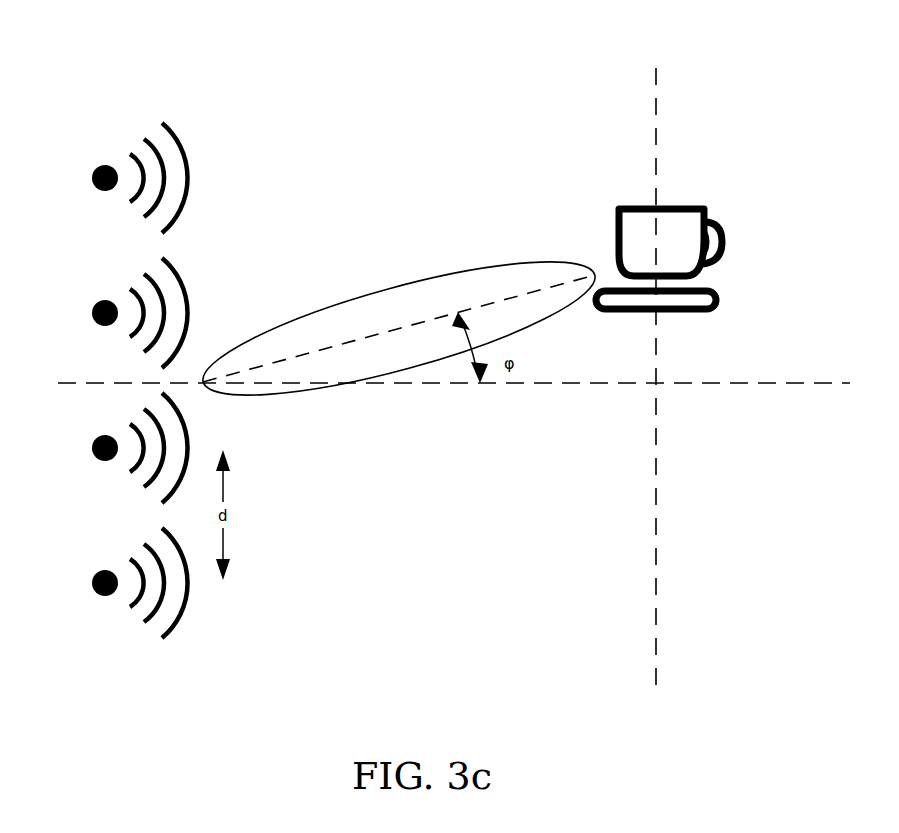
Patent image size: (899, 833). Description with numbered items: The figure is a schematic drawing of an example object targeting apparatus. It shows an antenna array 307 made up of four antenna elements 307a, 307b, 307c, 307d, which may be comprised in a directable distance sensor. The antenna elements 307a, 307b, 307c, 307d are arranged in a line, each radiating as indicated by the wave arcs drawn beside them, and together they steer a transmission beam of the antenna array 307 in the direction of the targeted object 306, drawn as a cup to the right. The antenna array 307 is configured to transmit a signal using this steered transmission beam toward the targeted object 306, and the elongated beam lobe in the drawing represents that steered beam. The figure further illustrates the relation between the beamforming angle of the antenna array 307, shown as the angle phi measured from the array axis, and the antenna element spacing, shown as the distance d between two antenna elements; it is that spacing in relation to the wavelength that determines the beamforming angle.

The antenna array 307 is at (50, 72).
The antenna element 307a is at (76, 178).
The antenna element 307b is at (76, 313).
The antenna element 307c is at (76, 448).
The antenna element 307d is at (76, 583).
The targeted object 306 is at (672, 205).